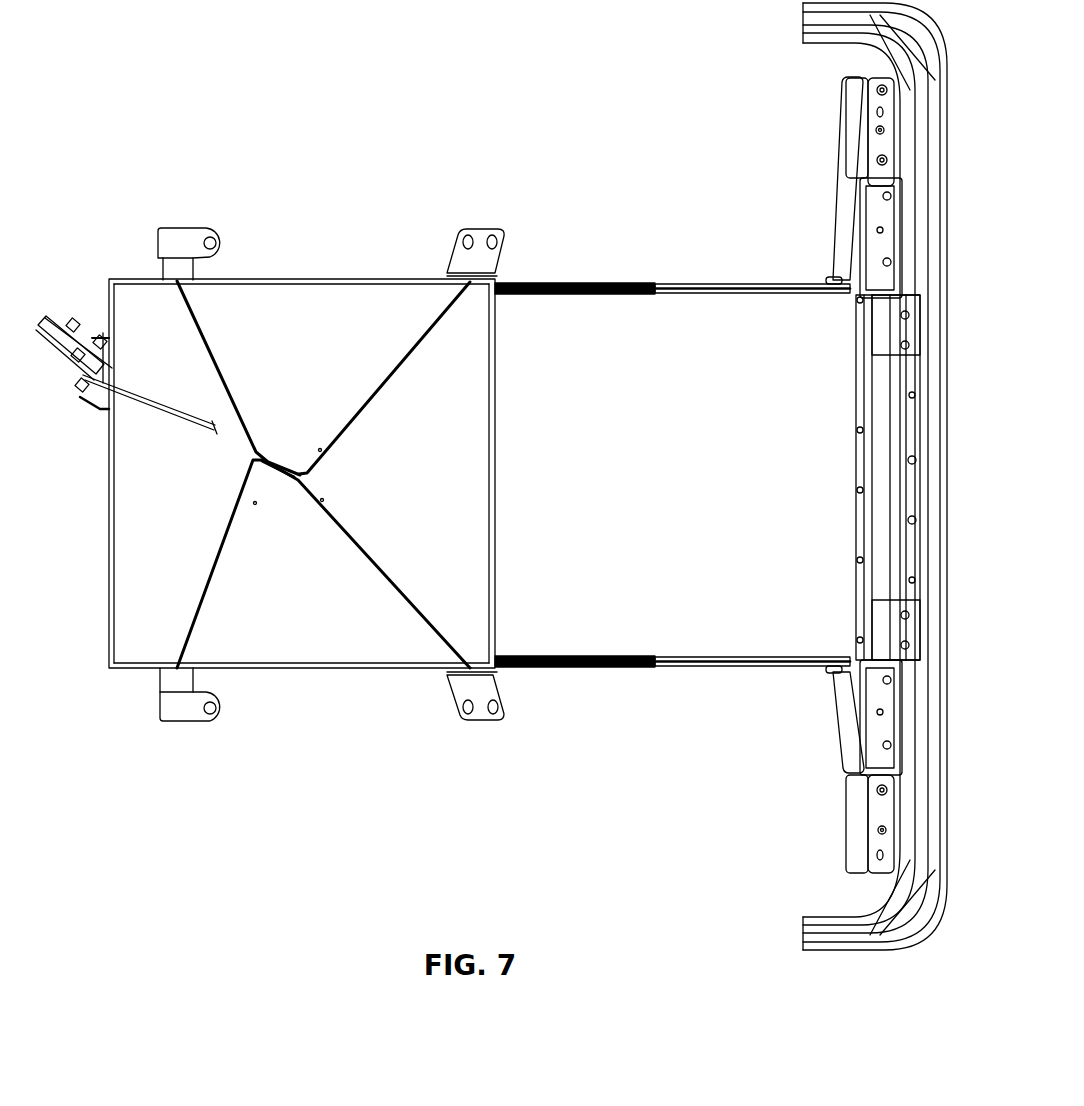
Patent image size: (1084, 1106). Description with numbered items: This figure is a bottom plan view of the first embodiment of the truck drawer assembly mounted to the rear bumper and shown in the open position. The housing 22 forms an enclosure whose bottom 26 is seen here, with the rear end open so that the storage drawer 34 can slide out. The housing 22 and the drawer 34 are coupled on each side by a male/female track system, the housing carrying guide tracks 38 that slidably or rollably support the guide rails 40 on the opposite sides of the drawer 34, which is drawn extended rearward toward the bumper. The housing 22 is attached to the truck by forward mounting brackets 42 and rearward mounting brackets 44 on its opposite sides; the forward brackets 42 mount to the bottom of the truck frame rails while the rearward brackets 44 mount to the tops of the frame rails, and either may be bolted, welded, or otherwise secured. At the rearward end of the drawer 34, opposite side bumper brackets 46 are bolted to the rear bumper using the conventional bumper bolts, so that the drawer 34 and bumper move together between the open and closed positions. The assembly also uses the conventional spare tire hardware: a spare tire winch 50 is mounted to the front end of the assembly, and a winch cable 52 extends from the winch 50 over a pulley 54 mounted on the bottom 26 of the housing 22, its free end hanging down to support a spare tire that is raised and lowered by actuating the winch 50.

The housing 22 is at (305, 300).
The bottom 26 is at (310, 655).
The storage drawer 34 is at (672, 475).
The guide tracks 38 is at (580, 283).
The guide rails 40 is at (700, 281).
The forward mounting brackets 42 is at (178, 240).
The rearward mounting brackets 44 is at (482, 240).
The bumper brackets 46 is at (840, 232).
The spare tire winch 50 is at (65, 345).
The winch cable 52 is at (167, 405).
The pulley 54 is at (282, 460).